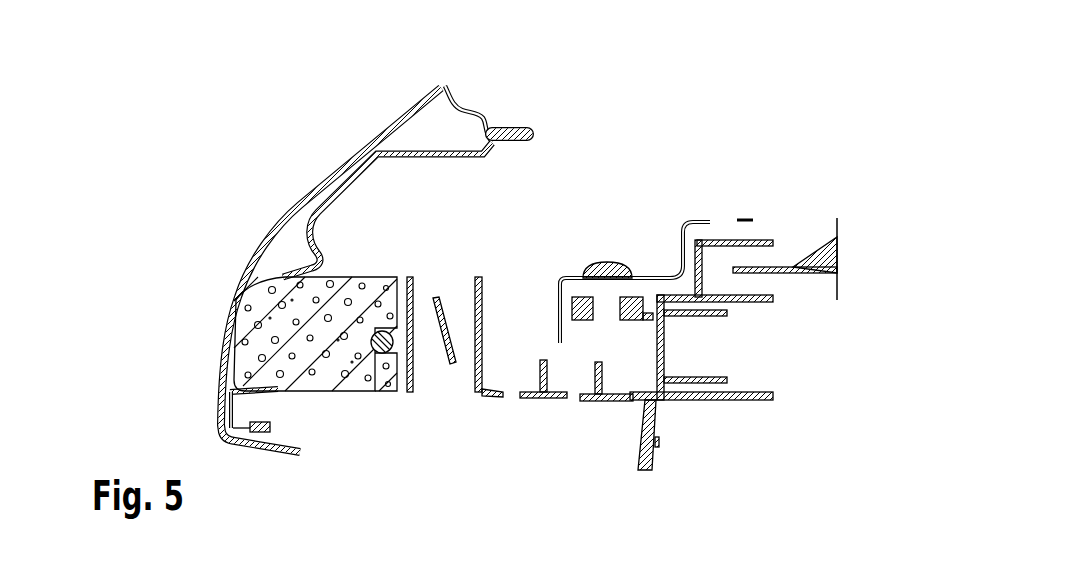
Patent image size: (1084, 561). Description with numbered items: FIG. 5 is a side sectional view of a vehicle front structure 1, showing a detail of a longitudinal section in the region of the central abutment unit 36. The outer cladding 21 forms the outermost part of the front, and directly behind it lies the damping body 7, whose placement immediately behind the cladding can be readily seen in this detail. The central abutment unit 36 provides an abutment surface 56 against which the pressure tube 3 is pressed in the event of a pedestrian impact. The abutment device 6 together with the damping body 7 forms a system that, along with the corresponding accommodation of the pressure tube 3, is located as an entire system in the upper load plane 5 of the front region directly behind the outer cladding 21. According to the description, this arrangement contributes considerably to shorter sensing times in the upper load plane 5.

The motor vehicle 1 is at (147, 80).
The upper load plane 5 is at (185, 278).
The outer cladding 21 is at (307, 198).
The abutment surface 56 is at (408, 278).
The damping body 7 is at (357, 286).
The central abutment unit 36 is at (485, 278).
The abutment device 6 is at (488, 337).
The pressure tube 3 is at (374, 354).